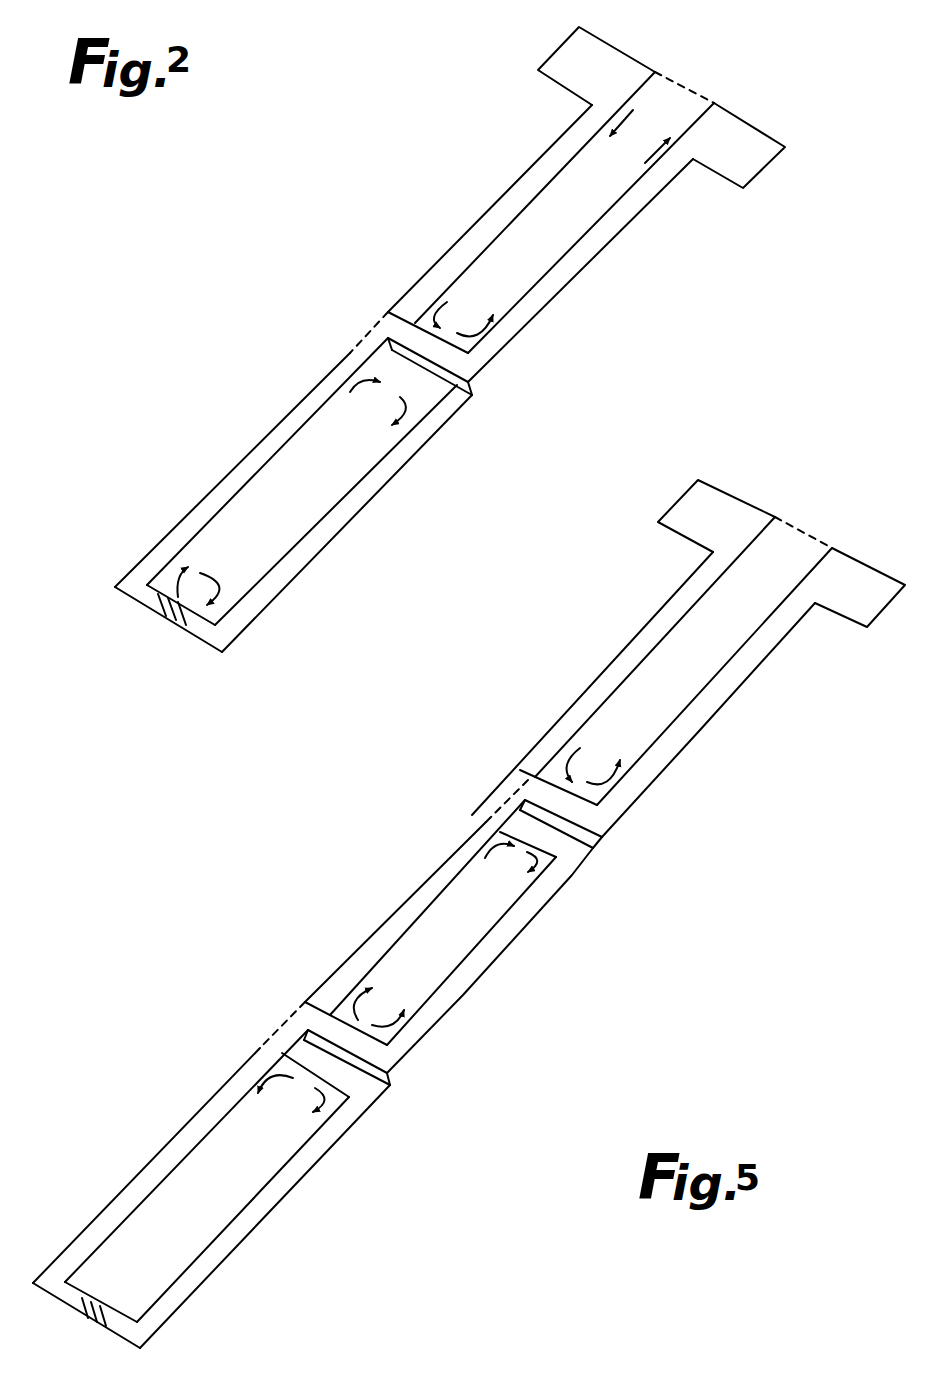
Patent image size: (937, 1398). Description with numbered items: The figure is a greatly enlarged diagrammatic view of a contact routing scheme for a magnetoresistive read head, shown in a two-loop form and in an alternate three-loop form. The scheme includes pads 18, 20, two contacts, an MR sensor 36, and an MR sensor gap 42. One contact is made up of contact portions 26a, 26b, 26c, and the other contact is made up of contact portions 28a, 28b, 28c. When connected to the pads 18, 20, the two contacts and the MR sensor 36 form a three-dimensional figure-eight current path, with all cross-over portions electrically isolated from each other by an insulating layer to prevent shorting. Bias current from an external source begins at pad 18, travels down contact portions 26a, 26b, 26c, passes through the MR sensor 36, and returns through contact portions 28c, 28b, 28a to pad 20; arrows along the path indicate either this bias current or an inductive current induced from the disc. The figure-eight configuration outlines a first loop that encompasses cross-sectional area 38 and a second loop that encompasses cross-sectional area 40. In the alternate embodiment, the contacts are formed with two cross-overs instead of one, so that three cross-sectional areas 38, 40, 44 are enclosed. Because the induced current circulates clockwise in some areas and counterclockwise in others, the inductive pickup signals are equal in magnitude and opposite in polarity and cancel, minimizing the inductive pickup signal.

In FIG. 2, the pad 18 is at (593, 57).
In FIG. 5, the pad 18 is at (722, 513).
In FIG. 2, the pad 20 is at (740, 132).
In FIG. 5, the pad 20 is at (840, 567).
In FIG. 2, the contact portion 26a is at (542, 158).
In FIG. 2, the contact portion 26b is at (380, 366).
In FIG. 2, the contact portion 26c is at (380, 474).
In FIG. 2, the contact portion 28a is at (628, 210).
In FIG. 2, the contact portion 28b is at (460, 367).
In FIG. 2, the contact portion 28c is at (242, 470).
In FIG. 2, the MR sensor 36 is at (167, 622).
In FIG. 5, the MR sensor 36 is at (87, 1317).
In FIG. 2, the cross-sectional area 38 is at (553, 245).
In FIG. 5, the cross-sectional area 38 is at (468, 942).
In FIG. 2, the cross-sectional area 40 is at (315, 495).
In FIG. 5, the cross-sectional area 40 is at (230, 1192).
In FIG. 2, the MR sensor gap 42 is at (205, 580).
In FIG. 5, the MR sensor gap 42 is at (98, 1292).
In FIG. 5, the cross-sectional area 44 is at (740, 630).